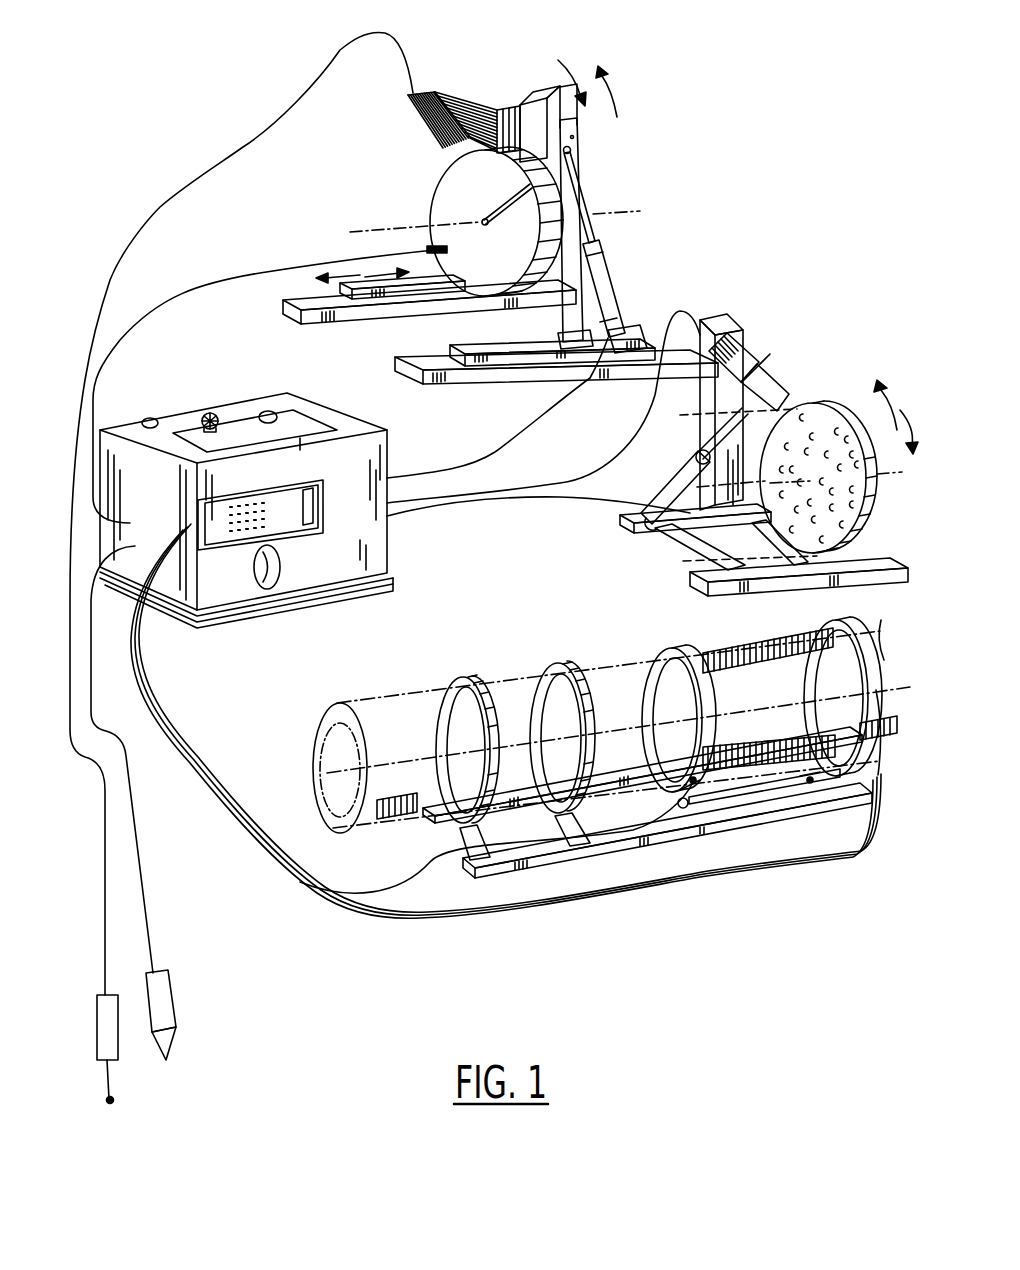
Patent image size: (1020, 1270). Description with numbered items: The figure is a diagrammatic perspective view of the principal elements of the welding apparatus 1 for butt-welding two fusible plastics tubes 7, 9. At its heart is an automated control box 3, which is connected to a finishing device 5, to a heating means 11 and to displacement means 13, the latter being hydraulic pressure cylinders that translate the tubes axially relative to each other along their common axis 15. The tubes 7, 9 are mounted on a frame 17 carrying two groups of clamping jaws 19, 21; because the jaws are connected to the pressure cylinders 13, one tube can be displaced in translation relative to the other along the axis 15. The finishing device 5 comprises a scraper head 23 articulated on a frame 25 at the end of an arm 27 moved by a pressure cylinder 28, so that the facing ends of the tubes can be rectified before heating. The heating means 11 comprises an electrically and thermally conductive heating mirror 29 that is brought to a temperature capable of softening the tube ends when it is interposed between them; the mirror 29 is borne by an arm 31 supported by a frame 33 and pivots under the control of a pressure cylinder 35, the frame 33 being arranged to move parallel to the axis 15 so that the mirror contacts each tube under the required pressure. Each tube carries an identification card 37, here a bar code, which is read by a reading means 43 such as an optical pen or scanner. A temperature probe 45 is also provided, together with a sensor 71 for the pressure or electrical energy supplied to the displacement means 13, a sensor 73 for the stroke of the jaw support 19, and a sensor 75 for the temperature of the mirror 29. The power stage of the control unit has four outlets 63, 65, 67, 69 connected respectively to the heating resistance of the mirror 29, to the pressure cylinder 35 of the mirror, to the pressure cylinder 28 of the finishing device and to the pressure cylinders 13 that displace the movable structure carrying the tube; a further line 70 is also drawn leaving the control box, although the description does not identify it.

The welding apparatus 1 is at (246, 473).
The automated control box 3 is at (190, 392).
The finishing device 5 is at (795, 378).
The fusible plastics tube 7 is at (886, 645).
The fusible plastics tube 9 is at (407, 713).
The heating means 11 is at (493, 84).
The displacement means 13 is at (785, 665).
The common axis 15 is at (620, 700).
The frame 17 is at (567, 658).
The clamping jaws 19 is at (700, 650).
The clamping jaws 21 is at (487, 692).
The scraper head 23 is at (828, 430).
The frame 25 is at (628, 533).
The arm 27 is at (752, 358).
The pressure cylinder 28 is at (672, 480).
The heating mirror 29 is at (455, 205).
The arm 31 is at (580, 134).
The frame 33 is at (410, 363).
The pressure cylinder 35 is at (612, 272).
The identification card 37 is at (400, 823).
The reading means 43 is at (180, 1010).
The temperature probe 45 is at (100, 1060).
The outlet 63 is at (125, 255).
The outlet 65 is at (485, 460).
The outlet 67 is at (495, 502).
The outlet 69 is at (376, 925).
The cable 70 is at (569, 470).
The sensor 71 is at (810, 785).
The displacement sensor 73 is at (693, 790).
The mirror temperature sensor 75 is at (430, 247).